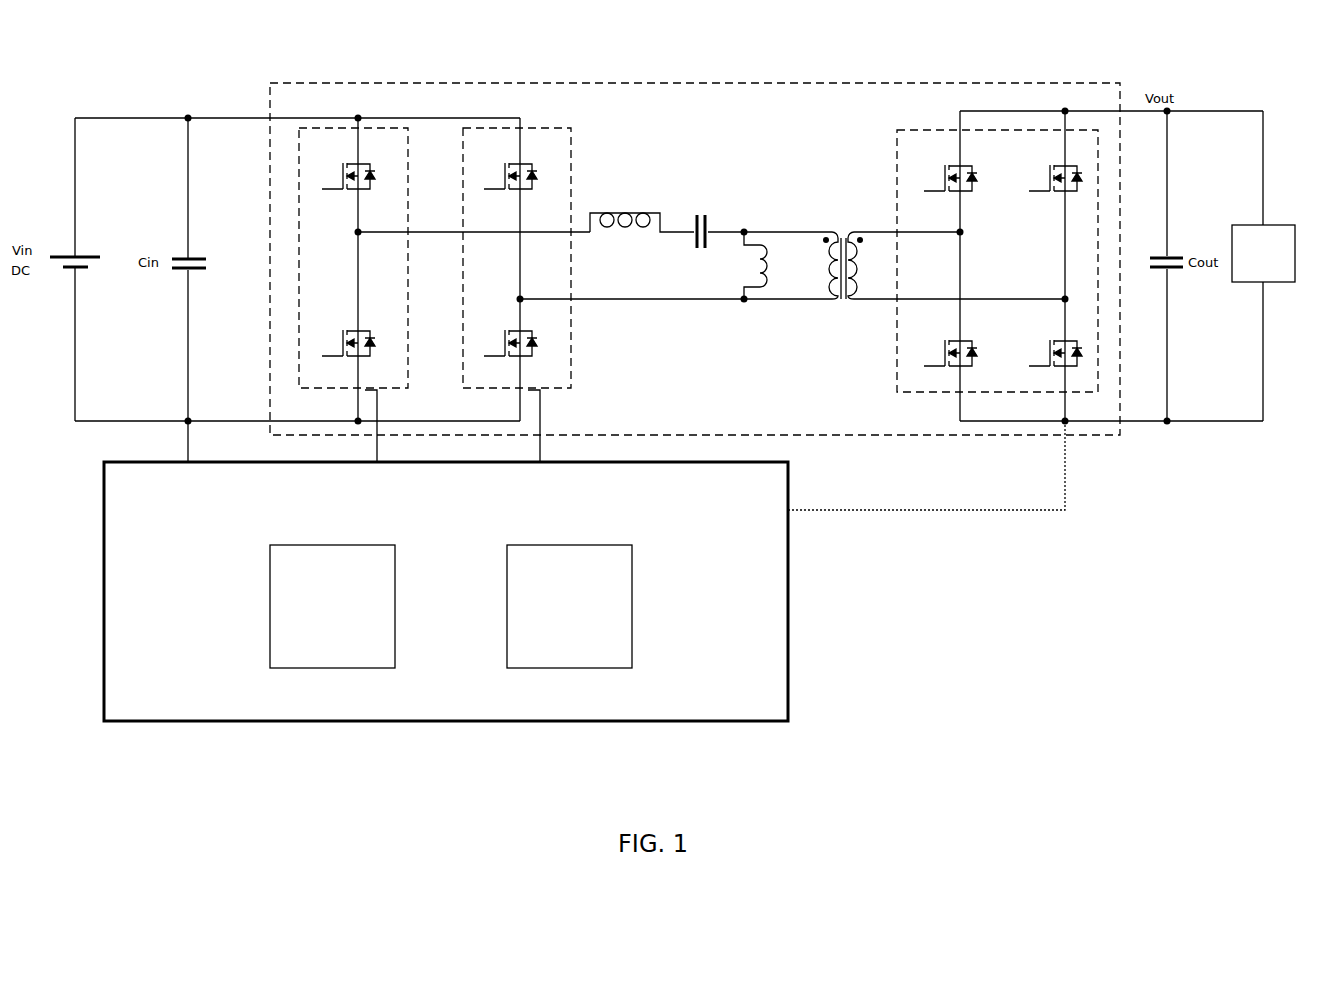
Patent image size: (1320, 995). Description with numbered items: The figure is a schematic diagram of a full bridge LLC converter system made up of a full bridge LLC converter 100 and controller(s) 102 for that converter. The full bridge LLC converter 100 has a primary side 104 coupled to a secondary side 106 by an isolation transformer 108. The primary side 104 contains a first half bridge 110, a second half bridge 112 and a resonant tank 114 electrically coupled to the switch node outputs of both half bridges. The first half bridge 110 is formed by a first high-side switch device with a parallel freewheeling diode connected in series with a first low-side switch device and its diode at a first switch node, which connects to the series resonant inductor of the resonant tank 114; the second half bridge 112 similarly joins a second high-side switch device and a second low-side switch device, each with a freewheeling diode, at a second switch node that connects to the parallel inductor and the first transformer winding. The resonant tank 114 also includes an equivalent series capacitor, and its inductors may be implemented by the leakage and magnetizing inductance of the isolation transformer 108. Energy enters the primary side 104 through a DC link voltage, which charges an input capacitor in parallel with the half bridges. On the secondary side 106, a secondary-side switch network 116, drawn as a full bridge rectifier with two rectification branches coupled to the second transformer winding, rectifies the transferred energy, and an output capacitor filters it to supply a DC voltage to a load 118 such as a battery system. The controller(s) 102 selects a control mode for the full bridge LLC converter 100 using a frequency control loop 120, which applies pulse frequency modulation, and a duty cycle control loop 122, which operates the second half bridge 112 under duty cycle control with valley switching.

The full bridge LLC converter 100 is at (733, 111).
The controller(s) 102 is at (533, 501).
The primary side 104 is at (292, 83).
The secondary side 106 is at (877, 83).
The isolation transformer 108 is at (810, 211).
The first half bridge 110 is at (368, 286).
The second half bridge 112 is at (527, 280).
The resonant tank 114 is at (588, 192).
The secondary-side switch network 116 is at (988, 158).
The load 118 is at (1251, 262).
The frequency control loop 120 is at (321, 635).
The duty cycle control loop 122 is at (558, 655).